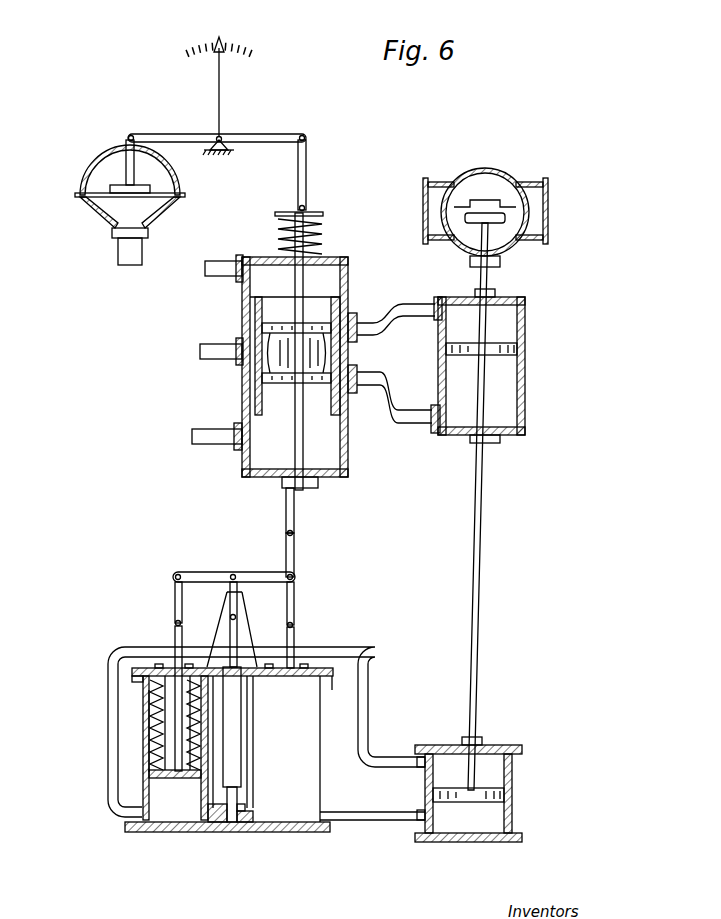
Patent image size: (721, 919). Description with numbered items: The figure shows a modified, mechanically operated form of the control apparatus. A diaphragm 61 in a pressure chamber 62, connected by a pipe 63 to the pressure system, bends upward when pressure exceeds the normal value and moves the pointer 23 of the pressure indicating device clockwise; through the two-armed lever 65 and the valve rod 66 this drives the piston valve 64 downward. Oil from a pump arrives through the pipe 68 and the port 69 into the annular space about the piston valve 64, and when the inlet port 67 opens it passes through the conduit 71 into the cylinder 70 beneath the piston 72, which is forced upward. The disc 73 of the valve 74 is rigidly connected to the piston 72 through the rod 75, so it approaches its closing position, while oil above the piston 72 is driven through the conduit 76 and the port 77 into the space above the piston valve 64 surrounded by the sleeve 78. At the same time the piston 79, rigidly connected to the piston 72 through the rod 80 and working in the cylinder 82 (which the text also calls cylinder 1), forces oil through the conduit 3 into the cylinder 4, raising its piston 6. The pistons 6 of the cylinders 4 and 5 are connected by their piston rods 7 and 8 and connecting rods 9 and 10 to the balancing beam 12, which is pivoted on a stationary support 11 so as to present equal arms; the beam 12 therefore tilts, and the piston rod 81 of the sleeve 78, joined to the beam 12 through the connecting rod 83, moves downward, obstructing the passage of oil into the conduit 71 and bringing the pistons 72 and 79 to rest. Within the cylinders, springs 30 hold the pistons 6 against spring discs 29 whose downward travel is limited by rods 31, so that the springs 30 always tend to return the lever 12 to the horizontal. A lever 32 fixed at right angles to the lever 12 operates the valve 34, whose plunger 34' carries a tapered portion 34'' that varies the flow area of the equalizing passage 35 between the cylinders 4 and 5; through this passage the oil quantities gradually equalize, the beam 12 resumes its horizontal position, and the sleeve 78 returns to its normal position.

The cylinder 1 is at (548, 859).
The conduit 3 is at (109, 765).
The cylinder 4 is at (147, 713).
The cylinder 5 is at (311, 722).
The pistons 6 is at (160, 785).
The piston rod 7 is at (175, 636).
The piston rod 8 is at (295, 648).
The connecting rod 9 is at (175, 591).
The connecting rod 10 is at (295, 613).
The stationary support 11 is at (238, 641).
The balancing beam 12 is at (207, 572).
The pointer 23 is at (222, 107).
The spring discs 29 is at (147, 776).
The springs 30 is at (147, 730).
The rods 31 is at (147, 695).
The lever 32 is at (237, 608).
The valve 34 is at (253, 727).
The plunger 34' is at (261, 796).
The tapered portion 34'' is at (269, 802).
The equalizing passage 35 is at (214, 824).
The diaphragm 61 is at (100, 210).
The pressure chamber 62 is at (148, 213).
The pipe 63 is at (130, 250).
The piston valve 64 is at (347, 312).
The two-armed lever 65 is at (262, 136).
The valve rod 66 is at (302, 277).
The inlet port 67 is at (346, 394).
The pipe 68 is at (218, 356).
The port 69 is at (264, 358).
The cylinder 70 is at (524, 395).
The conduit 71 is at (420, 420).
The piston 72 is at (520, 346).
The disc 73 is at (503, 224).
The valve 74 is at (545, 183).
The rod 75 is at (489, 283).
The conduit 76 is at (408, 305).
The port 77 is at (360, 324).
The sleeve 78 is at (258, 308).
The piston 79 is at (496, 793).
The rod 80 is at (477, 584).
The piston rod 81 is at (287, 503).
The cylinder 82 is at (514, 813).
The connecting rod 83 is at (296, 560).